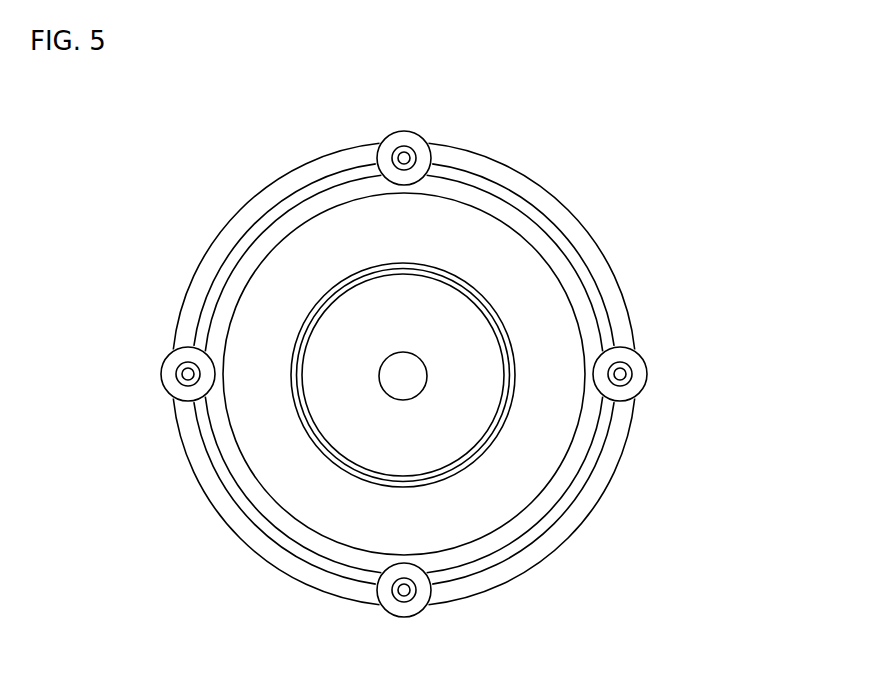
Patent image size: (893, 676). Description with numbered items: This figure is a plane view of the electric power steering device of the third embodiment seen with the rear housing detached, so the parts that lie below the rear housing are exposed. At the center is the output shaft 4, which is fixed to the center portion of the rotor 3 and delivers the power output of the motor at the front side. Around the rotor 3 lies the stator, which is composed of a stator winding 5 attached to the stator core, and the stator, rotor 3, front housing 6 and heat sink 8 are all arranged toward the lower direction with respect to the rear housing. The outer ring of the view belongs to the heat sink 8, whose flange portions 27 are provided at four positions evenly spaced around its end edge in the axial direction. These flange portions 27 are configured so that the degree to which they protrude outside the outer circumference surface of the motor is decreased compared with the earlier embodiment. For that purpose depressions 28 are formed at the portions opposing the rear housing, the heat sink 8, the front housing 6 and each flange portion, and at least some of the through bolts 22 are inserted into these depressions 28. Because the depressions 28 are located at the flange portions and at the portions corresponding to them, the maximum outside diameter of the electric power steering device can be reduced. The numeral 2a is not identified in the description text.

The heat sink 8 is at (552, 200).
The front housing 6 is at (577, 240).
The housing wall 2a is at (592, 287).
The stator winding 5 is at (579, 349).
The rotor 3 is at (494, 433).
The output shaft 4 is at (393, 354).
The flange portions of the heat sink 27 is at (647, 382).
The through bolts 22 is at (636, 395).
The depressions 28 is at (431, 583).